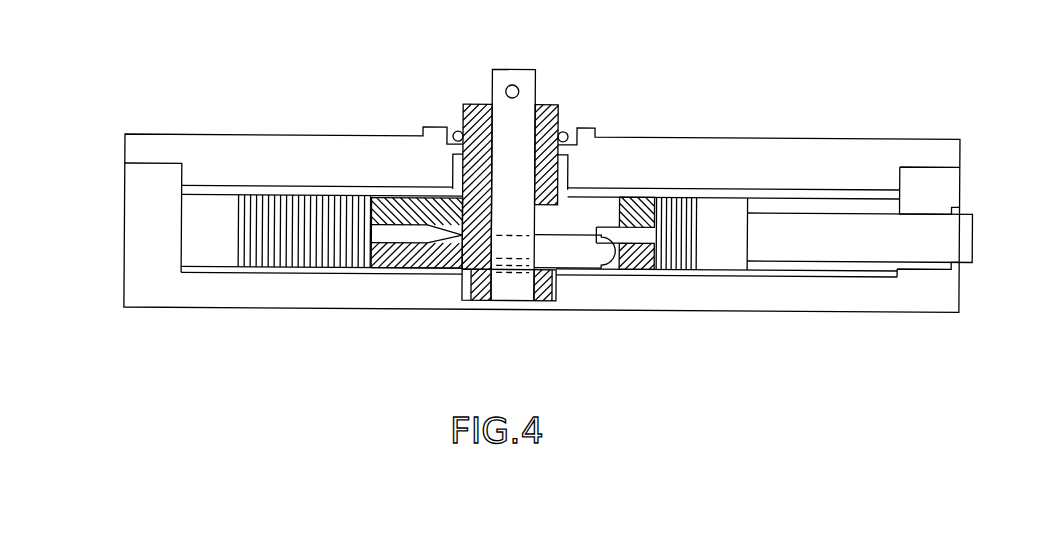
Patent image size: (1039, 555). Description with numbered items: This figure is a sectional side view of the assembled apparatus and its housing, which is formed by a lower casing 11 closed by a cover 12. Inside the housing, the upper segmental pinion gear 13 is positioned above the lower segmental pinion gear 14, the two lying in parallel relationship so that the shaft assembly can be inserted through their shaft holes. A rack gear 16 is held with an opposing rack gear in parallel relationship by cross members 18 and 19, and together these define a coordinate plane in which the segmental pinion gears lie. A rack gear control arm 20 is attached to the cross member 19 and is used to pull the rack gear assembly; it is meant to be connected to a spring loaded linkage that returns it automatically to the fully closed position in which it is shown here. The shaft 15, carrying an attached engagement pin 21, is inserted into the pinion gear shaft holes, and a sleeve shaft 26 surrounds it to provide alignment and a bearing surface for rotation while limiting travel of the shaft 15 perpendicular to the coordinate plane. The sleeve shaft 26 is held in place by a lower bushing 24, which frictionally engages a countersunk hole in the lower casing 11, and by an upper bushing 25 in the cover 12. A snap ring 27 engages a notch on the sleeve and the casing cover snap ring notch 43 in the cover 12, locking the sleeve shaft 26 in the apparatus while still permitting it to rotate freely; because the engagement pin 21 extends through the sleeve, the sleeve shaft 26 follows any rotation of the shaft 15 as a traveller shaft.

The lower casing 11 is at (125, 248).
The cover 12 is at (143, 137).
The upper segmental pinion gear 13 is at (403, 221).
The lower segmental pinion gear 14 is at (405, 257).
The shaft 15 is at (525, 73).
The rack gear 16 is at (290, 200).
The cross member 18 is at (212, 203).
The cross member 19 is at (738, 207).
The rack gear control arm 20 is at (970, 251).
The engagement pin 21 is at (577, 258).
The lower bushing 24 is at (466, 293).
The upper bushing 25 is at (568, 165).
The sleeve shaft 26 is at (476, 103).
The snap ring 27 is at (573, 133).
The casing cover snap ring notch 43 is at (452, 124).